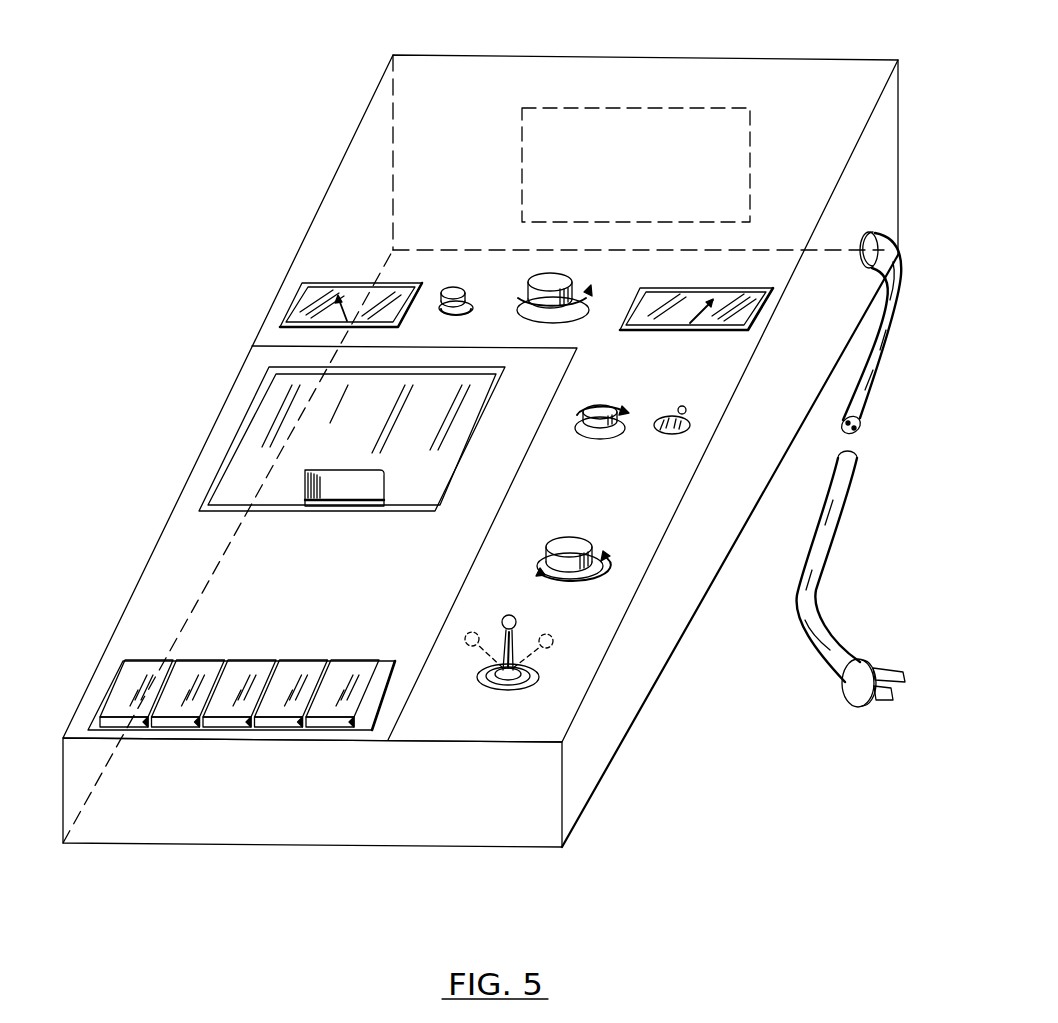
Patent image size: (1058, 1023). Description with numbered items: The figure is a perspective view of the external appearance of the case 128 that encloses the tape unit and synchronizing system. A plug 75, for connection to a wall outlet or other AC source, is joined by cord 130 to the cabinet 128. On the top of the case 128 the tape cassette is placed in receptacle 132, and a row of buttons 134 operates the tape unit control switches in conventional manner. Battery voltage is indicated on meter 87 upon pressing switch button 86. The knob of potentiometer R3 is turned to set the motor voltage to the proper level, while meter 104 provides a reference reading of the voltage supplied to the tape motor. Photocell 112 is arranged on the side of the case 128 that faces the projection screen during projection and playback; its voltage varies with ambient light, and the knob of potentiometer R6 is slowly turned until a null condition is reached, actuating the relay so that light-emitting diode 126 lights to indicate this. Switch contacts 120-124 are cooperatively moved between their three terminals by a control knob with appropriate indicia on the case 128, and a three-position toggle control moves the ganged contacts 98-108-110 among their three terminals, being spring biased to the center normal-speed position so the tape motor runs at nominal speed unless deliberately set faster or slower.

The photocell 112 is at (733, 107).
The meter 87 is at (405, 290).
The switch button 86 is at (480, 292).
The variable resistor R3 is at (553, 282).
The meter 104 is at (683, 315).
The cord 130 is at (861, 392).
The plug 75 is at (865, 658).
The receptacle 132 is at (398, 486).
The buttons 134 is at (297, 662).
The potentiometer R6 is at (600, 428).
The light-emitting diode 126 is at (688, 426).
The switch contacts 120-124 is at (542, 572).
The ganged contacts 98-108-110 is at (482, 684).
The case 128 is at (648, 680).